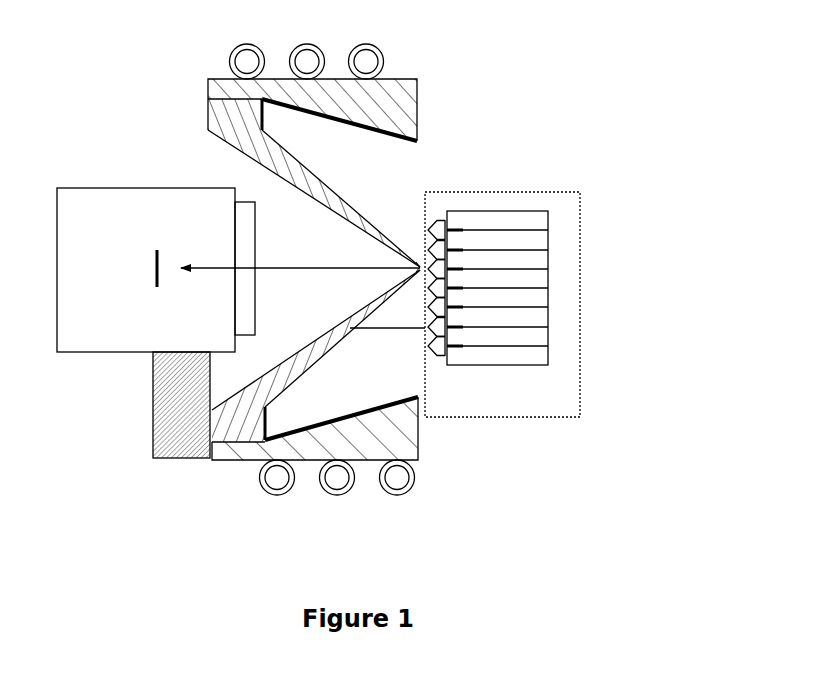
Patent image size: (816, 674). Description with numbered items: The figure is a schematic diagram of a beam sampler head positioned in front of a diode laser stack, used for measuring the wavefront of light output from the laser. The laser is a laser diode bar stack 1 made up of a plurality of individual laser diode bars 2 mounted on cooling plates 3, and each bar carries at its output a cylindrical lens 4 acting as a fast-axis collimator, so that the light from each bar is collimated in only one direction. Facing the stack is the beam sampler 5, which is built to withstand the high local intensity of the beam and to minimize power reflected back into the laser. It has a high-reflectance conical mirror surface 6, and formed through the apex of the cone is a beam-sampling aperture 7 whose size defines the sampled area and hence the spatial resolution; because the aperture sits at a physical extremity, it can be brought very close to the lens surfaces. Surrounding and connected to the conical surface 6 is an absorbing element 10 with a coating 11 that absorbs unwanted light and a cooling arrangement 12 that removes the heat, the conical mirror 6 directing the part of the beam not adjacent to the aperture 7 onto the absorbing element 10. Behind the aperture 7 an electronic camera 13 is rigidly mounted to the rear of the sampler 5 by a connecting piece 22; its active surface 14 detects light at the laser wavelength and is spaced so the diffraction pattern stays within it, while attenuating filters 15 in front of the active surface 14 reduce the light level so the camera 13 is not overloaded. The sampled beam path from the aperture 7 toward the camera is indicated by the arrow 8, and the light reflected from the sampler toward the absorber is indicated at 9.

The laser diode bar stack 1 is at (584, 310).
The laser diode bar 2 is at (460, 304).
The cooling plate 3 is at (494, 337).
The cylindrical lens 4 is at (439, 351).
The beam sampler 5 is at (215, 446).
The conical mirror surface 6 is at (392, 314).
The beam-sampling aperture 7 is at (417, 259).
The output beam 8 is at (300, 260).
The lower reflecting surface 9 is at (357, 330).
The absorbing element 10 is at (405, 117).
The coating 11 is at (336, 124).
The cooling arrangement 12 is at (388, 52).
The electronic camera 13 is at (146, 184).
The active surface 14 is at (153, 289).
The attenuating filters 15 is at (245, 247).
The connecting piece 22 is at (164, 405).